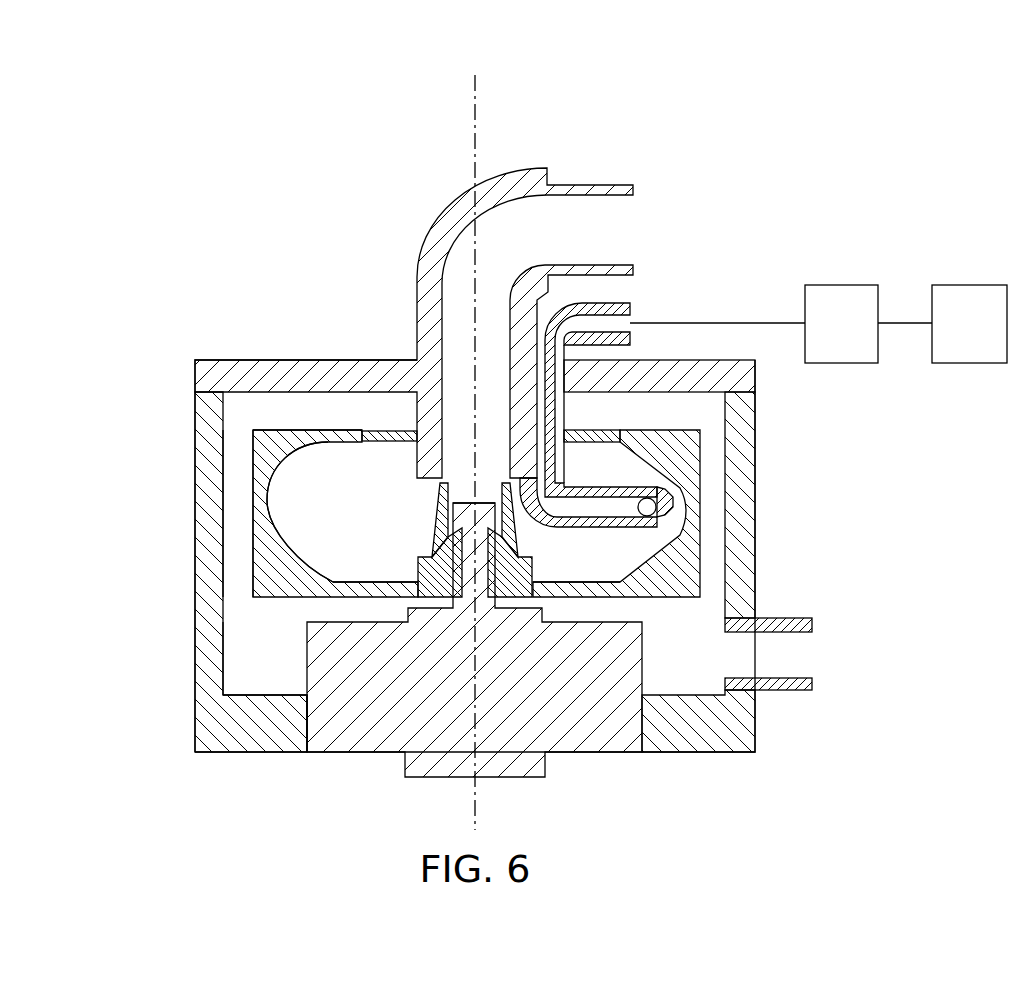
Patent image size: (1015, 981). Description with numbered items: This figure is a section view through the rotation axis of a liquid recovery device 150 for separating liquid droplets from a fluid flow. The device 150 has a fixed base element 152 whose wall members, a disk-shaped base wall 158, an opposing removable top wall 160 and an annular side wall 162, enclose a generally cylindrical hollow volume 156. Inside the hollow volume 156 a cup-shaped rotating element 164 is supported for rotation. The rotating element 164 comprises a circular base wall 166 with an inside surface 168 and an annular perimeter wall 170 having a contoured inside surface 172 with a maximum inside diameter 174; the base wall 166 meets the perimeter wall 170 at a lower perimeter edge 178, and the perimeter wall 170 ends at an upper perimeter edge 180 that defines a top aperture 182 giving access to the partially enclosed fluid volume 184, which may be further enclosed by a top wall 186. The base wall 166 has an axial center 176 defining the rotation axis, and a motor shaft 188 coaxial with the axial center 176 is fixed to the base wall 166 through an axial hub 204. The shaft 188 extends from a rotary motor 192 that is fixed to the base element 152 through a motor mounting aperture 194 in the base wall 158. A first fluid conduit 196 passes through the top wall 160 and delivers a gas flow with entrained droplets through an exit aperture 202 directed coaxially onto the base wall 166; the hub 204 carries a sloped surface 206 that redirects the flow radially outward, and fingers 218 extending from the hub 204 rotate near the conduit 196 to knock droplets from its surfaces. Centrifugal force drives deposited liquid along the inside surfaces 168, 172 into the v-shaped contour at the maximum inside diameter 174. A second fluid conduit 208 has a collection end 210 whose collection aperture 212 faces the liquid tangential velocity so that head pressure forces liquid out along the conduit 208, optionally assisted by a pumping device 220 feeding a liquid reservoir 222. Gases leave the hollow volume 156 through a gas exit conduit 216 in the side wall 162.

The liquid recovery device 150 is at (705, 85).
The fixed base element 152 is at (186, 747).
The hollow volume 156 is at (245, 652).
The base wall 158 is at (218, 732).
The top wall 160 is at (229, 360).
The annular side wall 162 is at (195, 622).
The rotating element 164 is at (241, 472).
The circular base wall 166 is at (377, 582).
The inside surface 168 is at (553, 582).
The annular perimeter wall 170 is at (257, 537).
The inside surface 172 is at (290, 553).
The maximum inside diameter 174 is at (268, 503).
The axial center 176 is at (480, 118).
The lower perimeter edge 178 is at (617, 582).
The upper perimeter edge 180 is at (622, 445).
The top aperture 182 is at (403, 437).
The partially enclosed fluid volume 184 is at (337, 469).
The top wall 186 is at (343, 430).
The motor shaft 188 is at (517, 493).
The rotary motor 192 is at (577, 734).
The motor mounting aperture 194 is at (307, 723).
The first fluid conduit 196 is at (568, 240).
The exit aperture 202 is at (455, 478).
The axial hub 204 is at (528, 598).
The sloped surface 206 is at (433, 558).
The second fluid conduit 208 is at (603, 310).
The collection end 210 is at (660, 494).
The collection aperture 212 is at (652, 508).
The gas exit conduit 216 is at (768, 669).
The fingers 218 is at (432, 494).
The pumping device 220 is at (821, 335).
The liquid reservoir 222 is at (949, 335).